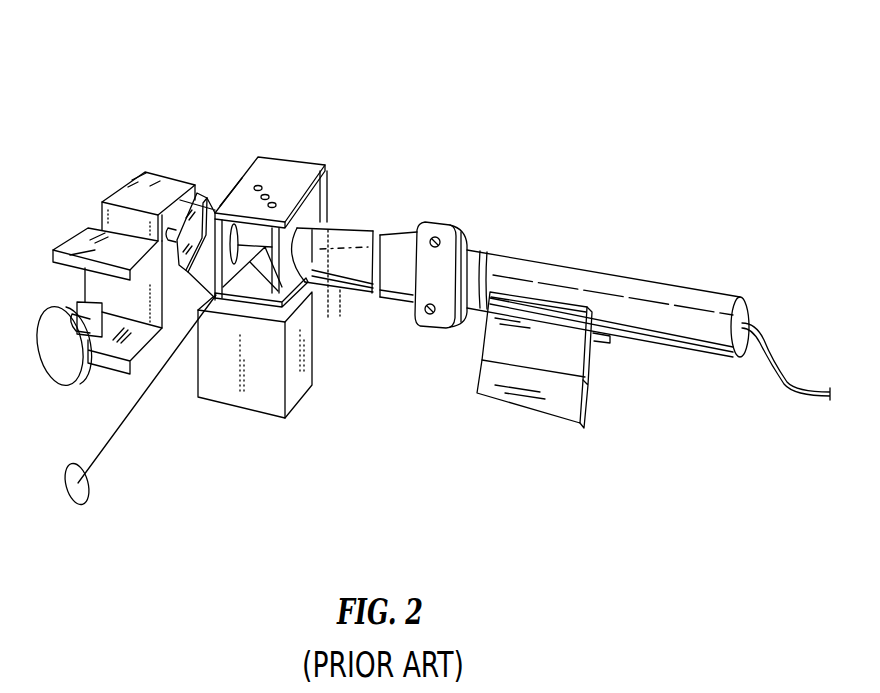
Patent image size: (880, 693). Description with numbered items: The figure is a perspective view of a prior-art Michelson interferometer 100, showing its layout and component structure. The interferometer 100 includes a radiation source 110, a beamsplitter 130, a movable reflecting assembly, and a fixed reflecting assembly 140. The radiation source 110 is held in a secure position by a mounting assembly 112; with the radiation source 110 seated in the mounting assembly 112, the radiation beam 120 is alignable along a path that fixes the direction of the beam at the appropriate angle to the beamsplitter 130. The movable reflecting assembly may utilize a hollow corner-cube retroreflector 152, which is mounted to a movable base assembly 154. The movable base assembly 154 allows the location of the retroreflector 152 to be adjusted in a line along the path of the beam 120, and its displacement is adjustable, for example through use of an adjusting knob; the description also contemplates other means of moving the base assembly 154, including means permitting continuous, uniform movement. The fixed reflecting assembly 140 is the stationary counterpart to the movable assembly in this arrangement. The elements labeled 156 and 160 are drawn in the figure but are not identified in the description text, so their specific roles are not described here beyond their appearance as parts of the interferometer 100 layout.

The interferometer 100 is at (492, 63).
The radiation source 110 is at (533, 260).
The mounting assembly 112 is at (592, 395).
The radiation beam 120 is at (298, 246).
The beamsplitter 130 is at (308, 335).
The fixed reflecting assembly 140 is at (298, 222).
The hollow corner-cube retroreflector 152 is at (178, 250).
The movable base assembly 154 is at (125, 185).
The adjustment knob 156 is at (63, 367).
The mirror 160 is at (198, 195).